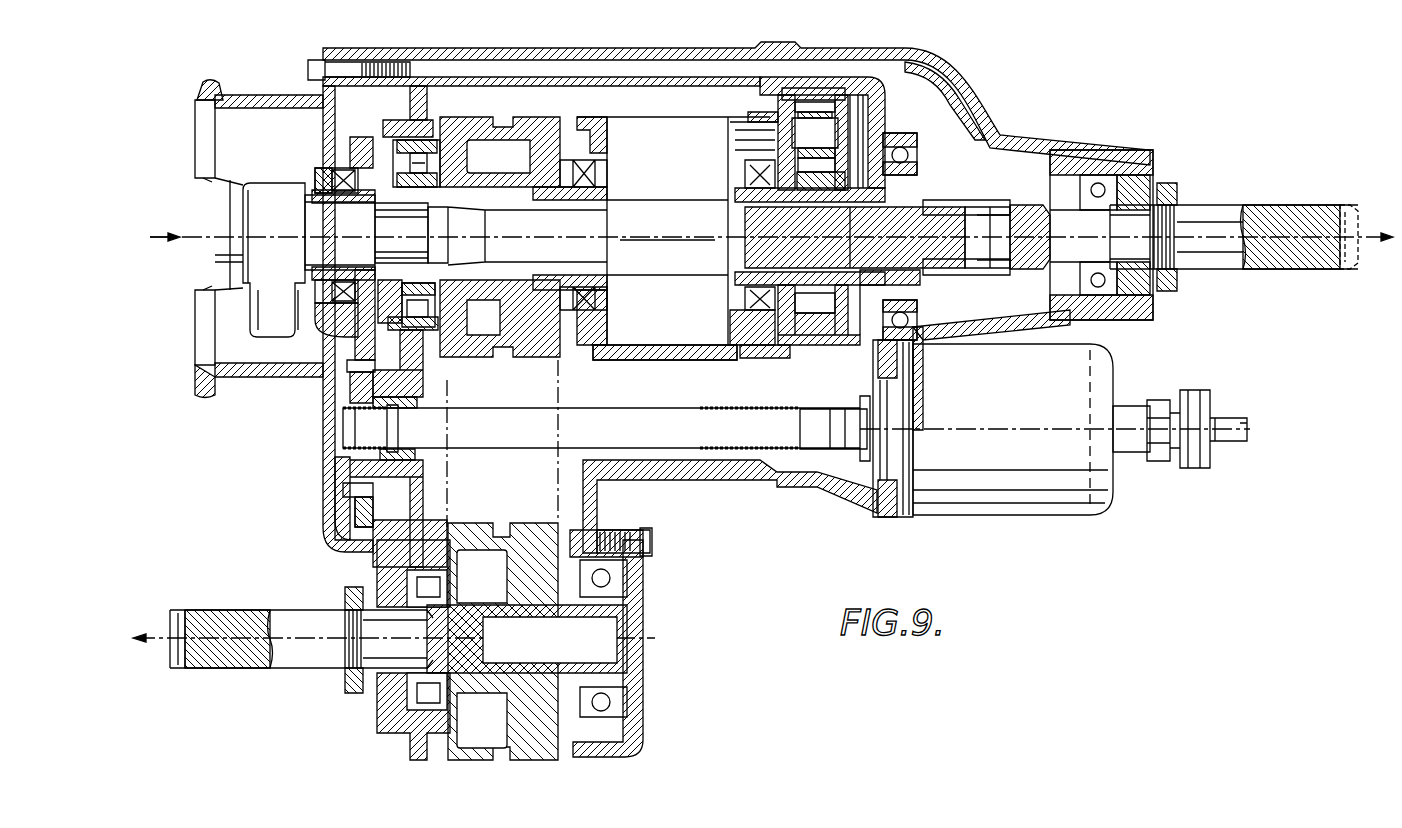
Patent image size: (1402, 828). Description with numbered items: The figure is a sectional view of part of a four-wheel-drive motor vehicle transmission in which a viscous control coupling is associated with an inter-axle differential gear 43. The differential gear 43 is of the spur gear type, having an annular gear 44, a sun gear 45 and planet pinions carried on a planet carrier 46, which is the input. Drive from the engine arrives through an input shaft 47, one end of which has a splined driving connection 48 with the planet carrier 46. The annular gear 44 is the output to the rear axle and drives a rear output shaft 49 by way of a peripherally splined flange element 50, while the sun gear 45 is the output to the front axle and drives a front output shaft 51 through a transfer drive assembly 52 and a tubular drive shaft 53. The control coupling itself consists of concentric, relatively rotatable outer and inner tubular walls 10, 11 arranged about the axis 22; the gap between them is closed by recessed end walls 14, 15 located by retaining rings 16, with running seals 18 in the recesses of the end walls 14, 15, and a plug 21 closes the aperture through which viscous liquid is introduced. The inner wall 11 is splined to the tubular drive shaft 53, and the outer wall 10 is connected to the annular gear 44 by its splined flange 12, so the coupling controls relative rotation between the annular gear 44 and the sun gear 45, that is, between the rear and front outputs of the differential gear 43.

The outer wall 10 is at (657, 130).
The inner wall 11 is at (558, 140).
The peripherally splined flange 12 is at (752, 110).
The end wall 14 is at (609, 115).
The end wall 15 is at (763, 357).
The retaining rings 16 is at (580, 130).
The running seals 18 is at (578, 183).
The plug 21 is at (772, 118).
The axis 22 is at (1206, 240).
The inter-axle differential gear 43 is at (828, 85).
The annular gear 44 is at (856, 90).
The sun gear 45 is at (752, 150).
The planet carrier 46 is at (886, 150).
The input shaft 47 is at (494, 236).
The splined driving connection 48 is at (932, 205).
The rear output shaft 49 is at (1257, 215).
The peripherally splined flange element 50 is at (900, 56).
The front output shaft 51 is at (257, 630).
The transfer drive assembly 52 is at (502, 108).
The tubular drive shaft 53 is at (533, 275).